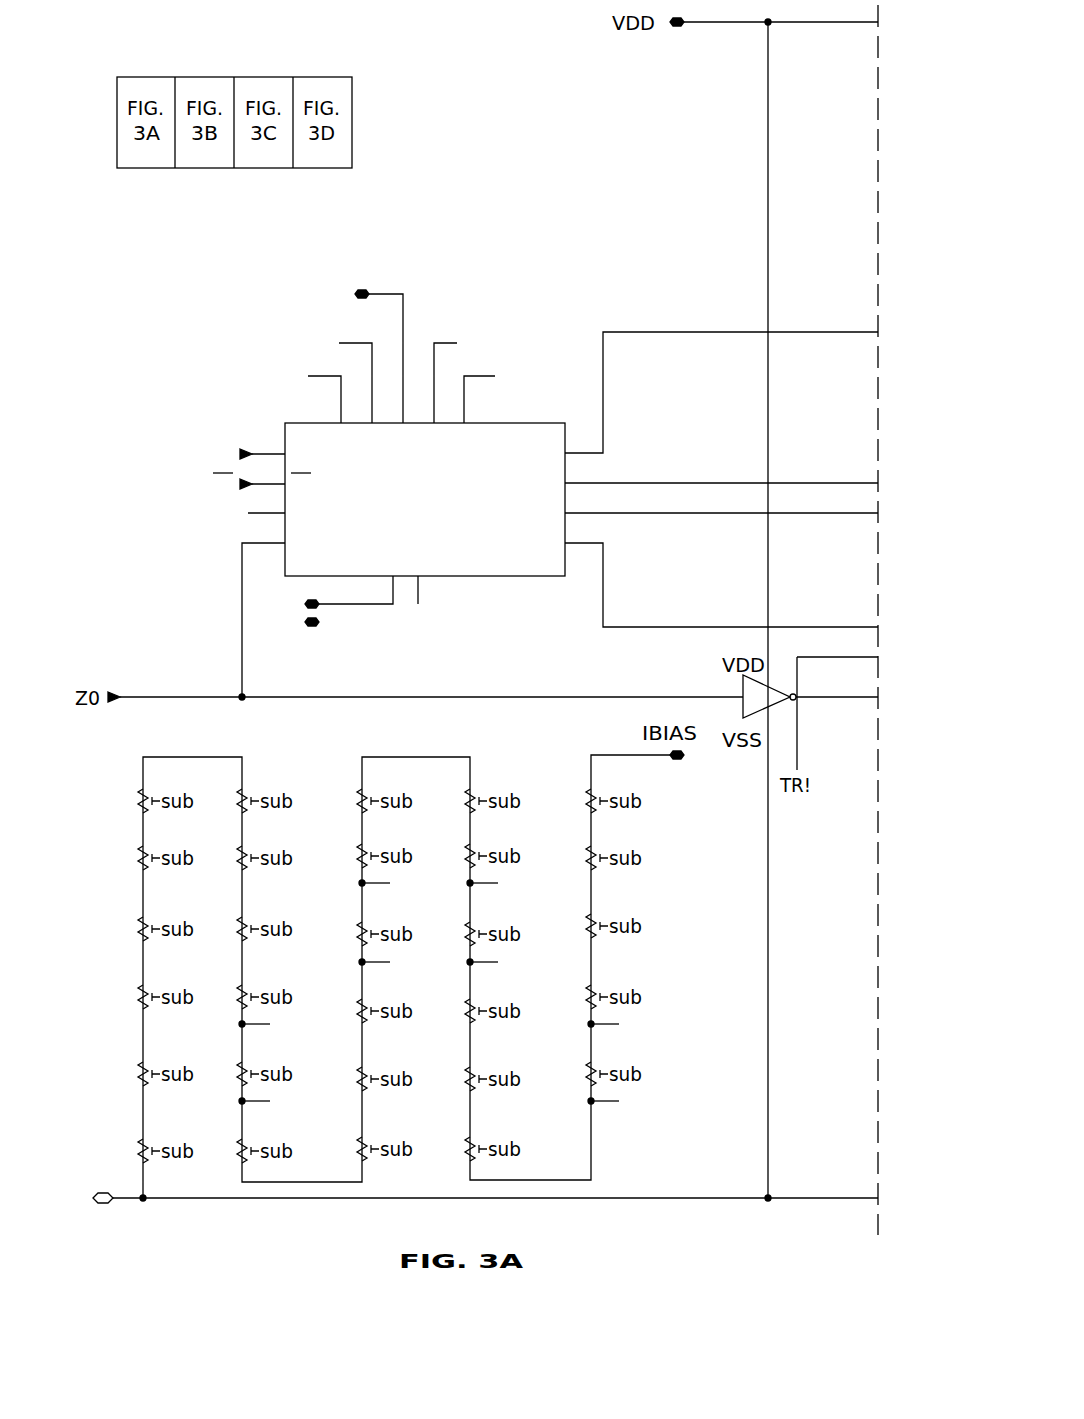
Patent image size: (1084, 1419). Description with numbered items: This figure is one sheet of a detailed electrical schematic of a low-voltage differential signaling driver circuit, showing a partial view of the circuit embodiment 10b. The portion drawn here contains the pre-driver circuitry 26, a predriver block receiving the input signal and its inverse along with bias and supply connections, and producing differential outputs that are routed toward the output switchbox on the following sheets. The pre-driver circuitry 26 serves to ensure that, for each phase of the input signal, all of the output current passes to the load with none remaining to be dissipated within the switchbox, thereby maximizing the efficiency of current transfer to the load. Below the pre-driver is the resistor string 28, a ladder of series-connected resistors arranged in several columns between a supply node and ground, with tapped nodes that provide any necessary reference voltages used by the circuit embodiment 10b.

The pre-driver circuitry 26 is at (535, 423).
The resistor string 28 is at (497, 733).
The circuit embodiment 10b is at (298, 1210).